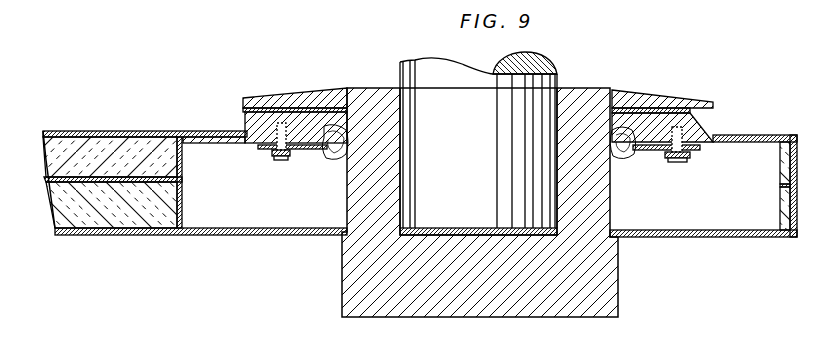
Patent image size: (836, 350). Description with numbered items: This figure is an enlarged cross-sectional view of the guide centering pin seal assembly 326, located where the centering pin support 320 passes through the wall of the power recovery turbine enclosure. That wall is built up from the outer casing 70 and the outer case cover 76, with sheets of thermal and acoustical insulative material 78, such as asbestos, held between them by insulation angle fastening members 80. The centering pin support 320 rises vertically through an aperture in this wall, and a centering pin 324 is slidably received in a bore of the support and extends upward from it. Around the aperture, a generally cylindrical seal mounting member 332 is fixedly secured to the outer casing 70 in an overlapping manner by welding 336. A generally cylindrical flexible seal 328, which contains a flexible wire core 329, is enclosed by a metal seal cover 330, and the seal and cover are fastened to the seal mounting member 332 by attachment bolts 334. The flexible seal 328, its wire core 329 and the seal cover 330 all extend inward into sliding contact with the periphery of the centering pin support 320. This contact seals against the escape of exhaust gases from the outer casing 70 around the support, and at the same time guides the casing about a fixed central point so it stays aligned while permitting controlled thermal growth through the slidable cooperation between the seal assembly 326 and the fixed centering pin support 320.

The outer casing 70 is at (176, 132).
The insulative material 78 is at (137, 208).
The insulation angle fastening members 80 is at (182, 208).
The outer case cover 76 is at (282, 236).
The seal mounting member 332 is at (320, 100).
The welding 336 is at (247, 133).
The centering pin support 320 is at (618, 288).
The centering pin 324 is at (422, 62).
The centering pin seal assembly 326 is at (676, 122).
The flexible wire core 329 is at (641, 113).
The seal cover 330 is at (694, 151).
The attachment bolts 334 is at (688, 163).
The flexible seal 328 is at (630, 162).